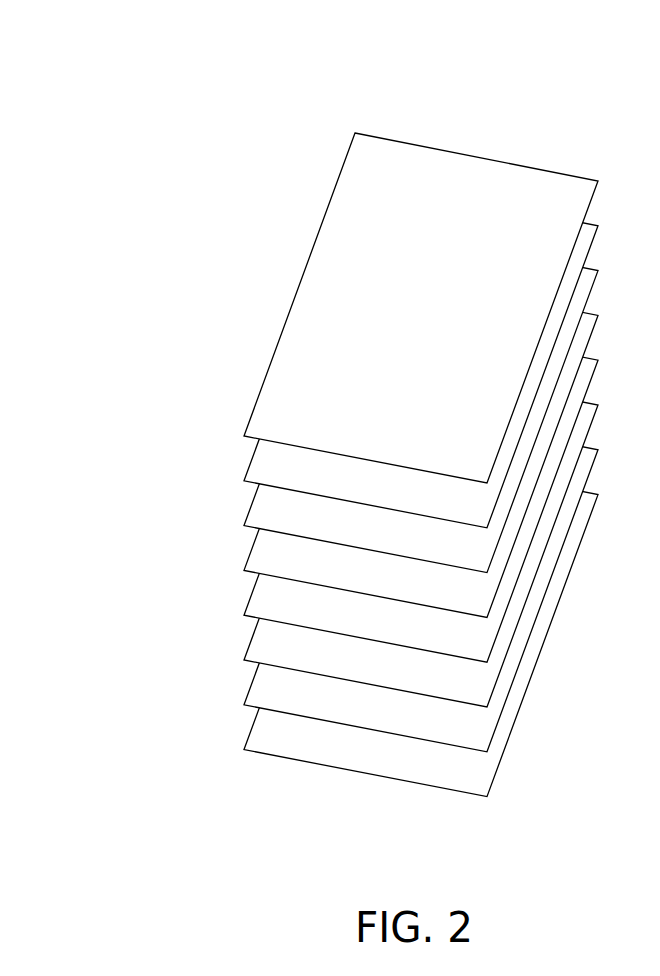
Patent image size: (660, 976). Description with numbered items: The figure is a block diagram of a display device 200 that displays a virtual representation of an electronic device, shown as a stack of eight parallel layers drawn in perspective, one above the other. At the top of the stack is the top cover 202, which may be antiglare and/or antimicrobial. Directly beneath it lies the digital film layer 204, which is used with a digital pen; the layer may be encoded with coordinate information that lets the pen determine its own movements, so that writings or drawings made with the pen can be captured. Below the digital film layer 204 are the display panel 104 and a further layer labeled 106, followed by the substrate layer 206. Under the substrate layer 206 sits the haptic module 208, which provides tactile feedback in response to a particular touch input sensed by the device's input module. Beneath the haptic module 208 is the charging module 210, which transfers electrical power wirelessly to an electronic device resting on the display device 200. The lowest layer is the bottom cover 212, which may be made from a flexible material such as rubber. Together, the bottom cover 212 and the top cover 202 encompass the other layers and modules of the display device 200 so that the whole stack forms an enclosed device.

The display device 200 is at (138, 57).
The top cover 202 is at (332, 193).
The digital film layer 204 is at (248, 463).
The display panel 104 is at (249, 513).
The second substrate layer 106 is at (248, 558).
The substrate layer 206 is at (250, 600).
The haptic module 208 is at (249, 645).
The charging module 210 is at (249, 690).
The bottom cover 212 is at (252, 728).